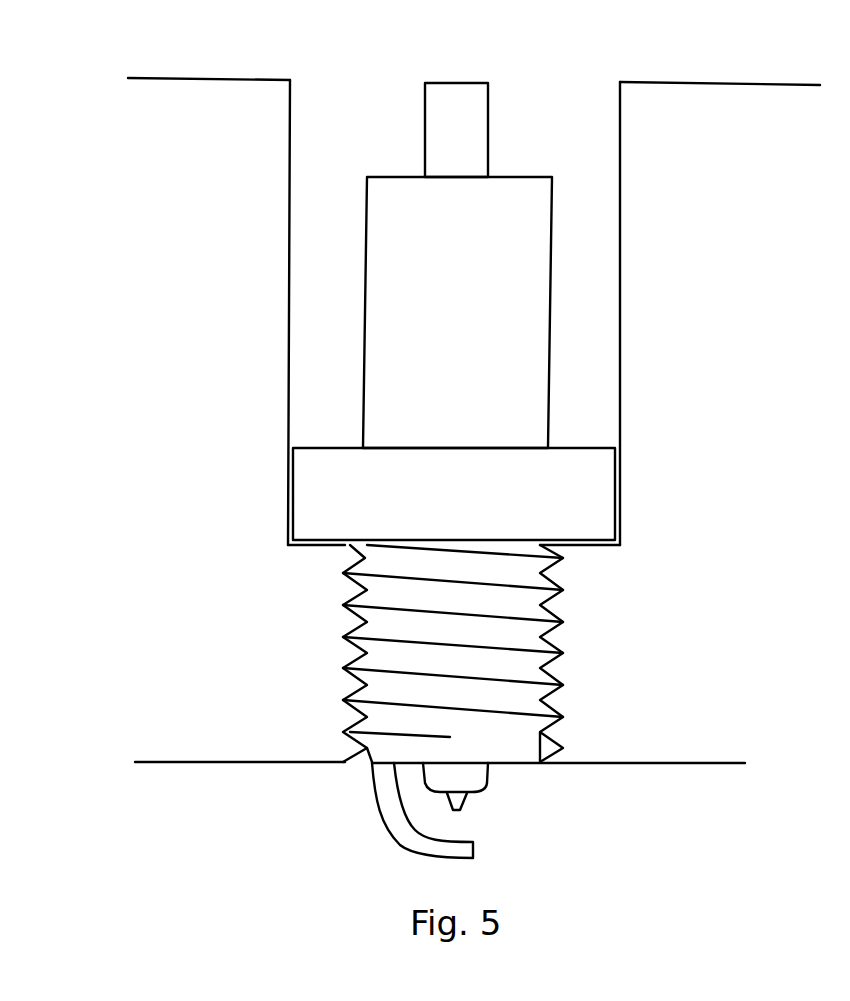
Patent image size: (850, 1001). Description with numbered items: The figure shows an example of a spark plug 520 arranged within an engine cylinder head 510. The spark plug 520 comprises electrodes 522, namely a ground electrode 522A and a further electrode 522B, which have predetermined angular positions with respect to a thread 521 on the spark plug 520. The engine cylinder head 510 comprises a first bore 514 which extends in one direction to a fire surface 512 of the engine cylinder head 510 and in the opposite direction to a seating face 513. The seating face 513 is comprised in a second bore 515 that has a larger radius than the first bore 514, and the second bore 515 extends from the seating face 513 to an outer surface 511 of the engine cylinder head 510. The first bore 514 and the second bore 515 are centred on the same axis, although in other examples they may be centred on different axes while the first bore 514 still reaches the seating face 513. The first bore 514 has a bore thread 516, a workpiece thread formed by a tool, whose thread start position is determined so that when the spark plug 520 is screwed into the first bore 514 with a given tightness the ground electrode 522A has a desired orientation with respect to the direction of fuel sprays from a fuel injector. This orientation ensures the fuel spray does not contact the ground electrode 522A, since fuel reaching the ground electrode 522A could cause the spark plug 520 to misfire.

The engine cylinder head 510 is at (222, 848).
The outer surface 511 is at (703, 80).
The fire surface 512 is at (630, 773).
The seating face 513 is at (598, 550).
The first bore 514 is at (360, 678).
The second bore 515 is at (620, 255).
The bore thread 516 is at (558, 677).
The spark plug 520 is at (582, 386).
The thread 521 is at (518, 703).
The electrodes 522 is at (508, 820).
The ground electrode 522A is at (487, 858).
The electrode 522B is at (473, 802).